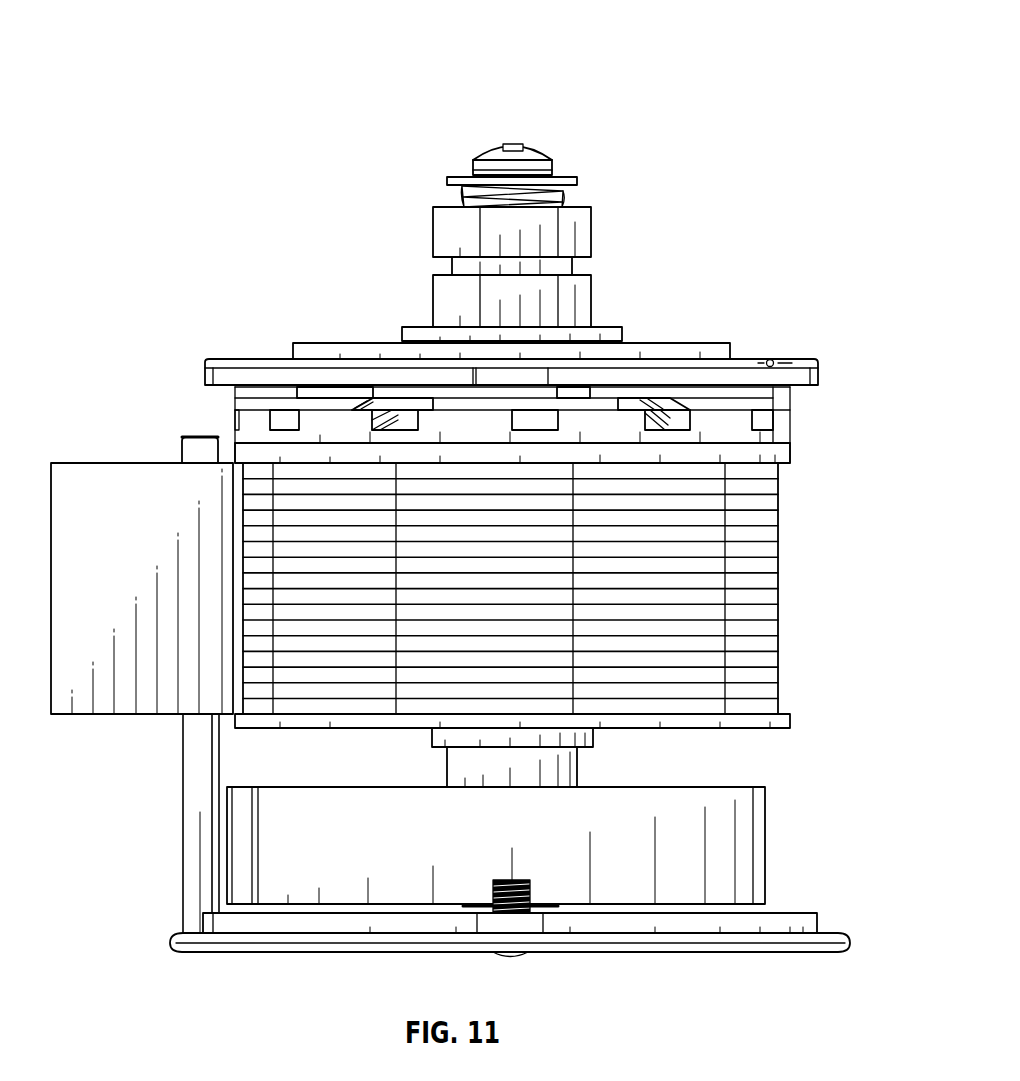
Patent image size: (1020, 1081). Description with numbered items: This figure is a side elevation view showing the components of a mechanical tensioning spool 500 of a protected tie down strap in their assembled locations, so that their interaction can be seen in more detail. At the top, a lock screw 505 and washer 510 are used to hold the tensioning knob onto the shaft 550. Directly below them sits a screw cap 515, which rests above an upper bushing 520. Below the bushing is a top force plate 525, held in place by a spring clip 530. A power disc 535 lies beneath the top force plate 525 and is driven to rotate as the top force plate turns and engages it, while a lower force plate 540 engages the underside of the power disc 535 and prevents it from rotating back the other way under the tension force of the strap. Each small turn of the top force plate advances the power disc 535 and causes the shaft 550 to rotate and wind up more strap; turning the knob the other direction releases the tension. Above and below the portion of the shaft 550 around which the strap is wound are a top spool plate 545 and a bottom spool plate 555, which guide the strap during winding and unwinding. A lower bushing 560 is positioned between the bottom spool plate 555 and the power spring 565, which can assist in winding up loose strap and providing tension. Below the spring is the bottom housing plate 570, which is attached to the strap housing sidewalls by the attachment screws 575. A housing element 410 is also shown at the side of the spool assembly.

The mechanical tensioning spool 500 is at (672, 50).
The lock screw 505 is at (490, 154).
The washer 510 is at (450, 180).
The shaft 550 is at (582, 191).
The screw cap 515 is at (591, 232).
The upper bushing 520 is at (400, 328).
The top force plate 525 is at (290, 355).
The spring clip 530 is at (748, 358).
The power disc 535 is at (250, 390).
The lower force plate 540 is at (787, 425).
The top spool plate 545 is at (787, 453).
The bottom spool plate 555 is at (299, 720).
The lower bushing 560 is at (593, 738).
The power spring 565 is at (765, 848).
The bottom housing plate 570 is at (850, 953).
The attachment screws 575 is at (508, 955).
The housing block 410 is at (96, 472).